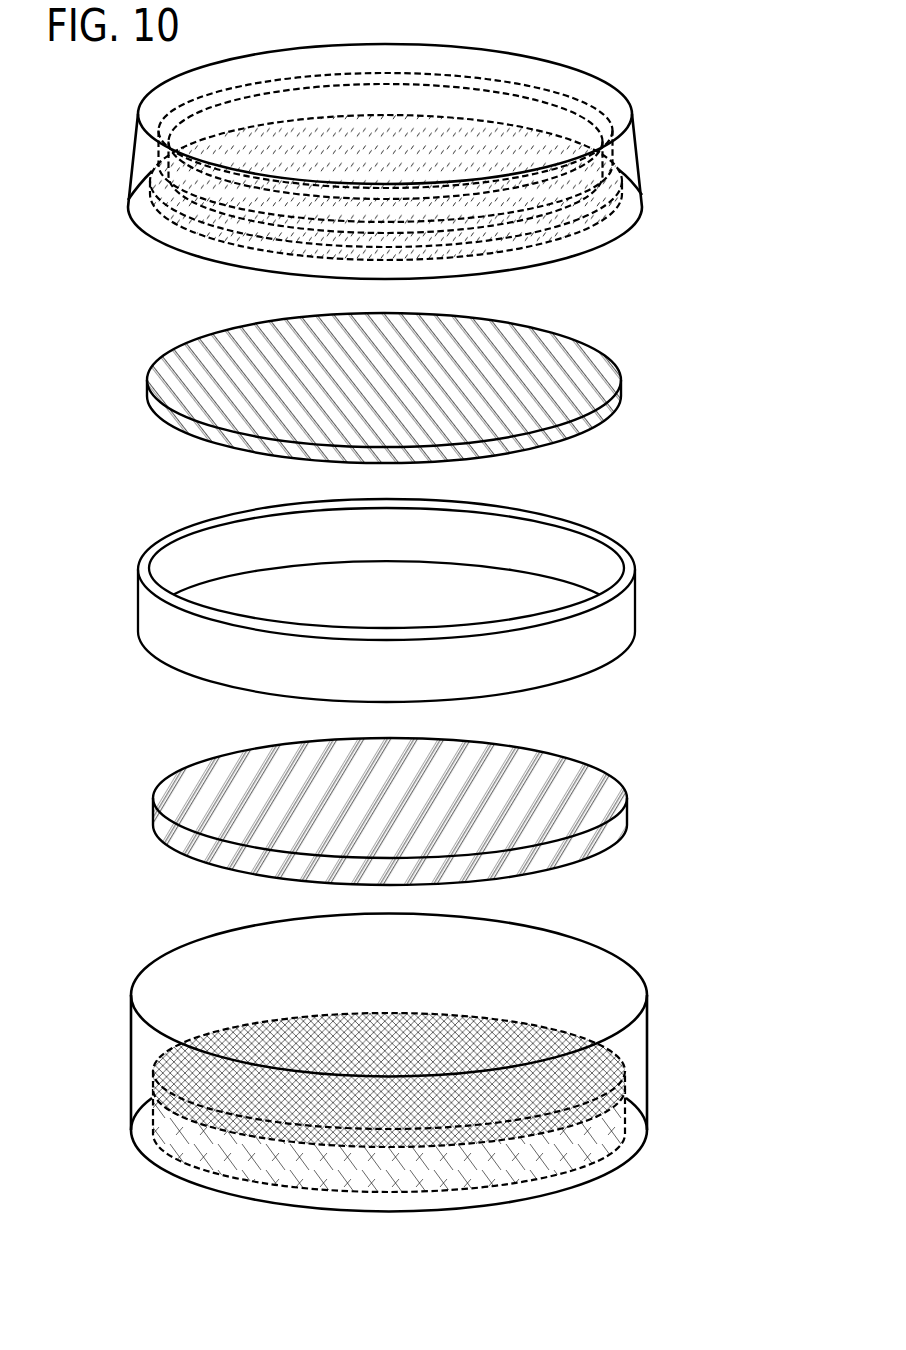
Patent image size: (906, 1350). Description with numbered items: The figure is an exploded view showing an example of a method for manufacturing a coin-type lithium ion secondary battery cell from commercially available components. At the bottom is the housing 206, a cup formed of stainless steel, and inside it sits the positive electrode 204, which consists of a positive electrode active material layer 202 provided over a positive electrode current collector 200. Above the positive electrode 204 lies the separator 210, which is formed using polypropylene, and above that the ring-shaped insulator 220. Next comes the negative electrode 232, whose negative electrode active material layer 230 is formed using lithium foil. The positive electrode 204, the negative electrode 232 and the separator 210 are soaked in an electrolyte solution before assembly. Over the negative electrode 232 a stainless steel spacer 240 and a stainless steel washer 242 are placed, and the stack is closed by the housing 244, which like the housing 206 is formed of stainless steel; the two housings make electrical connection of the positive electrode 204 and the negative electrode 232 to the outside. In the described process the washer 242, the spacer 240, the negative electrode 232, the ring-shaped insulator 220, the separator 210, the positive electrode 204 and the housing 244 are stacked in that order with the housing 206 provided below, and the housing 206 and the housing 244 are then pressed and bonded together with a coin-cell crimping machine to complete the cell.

The positive electrode current collector 200 is at (625, 1138).
The positive electrode active material layer 202 is at (625, 1102).
The positive electrode 204 is at (718, 1090).
The housing 206 is at (647, 1050).
The separator 210 is at (163, 827).
The ring-shaped insulator 220 is at (636, 603).
The negative electrode active material layer 230 is at (621, 402).
The negative electrode 232 is at (715, 375).
The spacer 240 is at (173, 230).
The washer 242 is at (163, 152).
The housing 244 is at (632, 114).